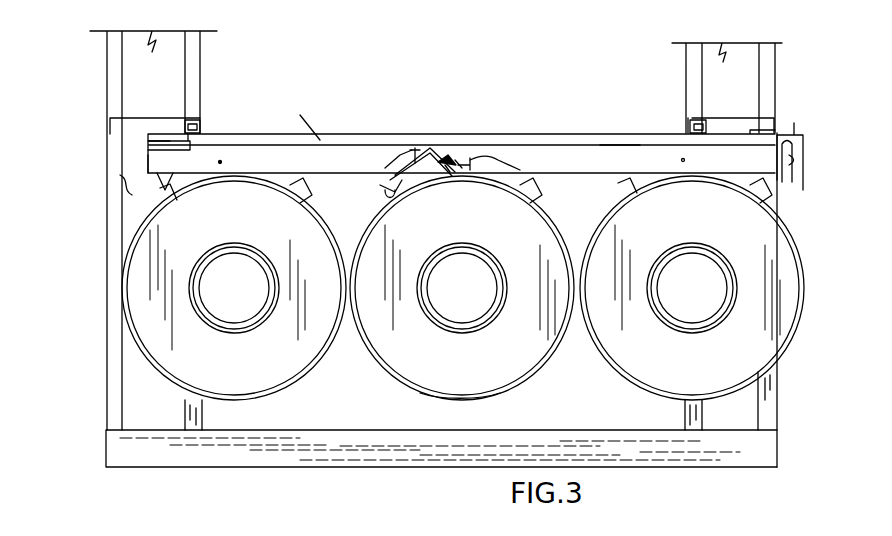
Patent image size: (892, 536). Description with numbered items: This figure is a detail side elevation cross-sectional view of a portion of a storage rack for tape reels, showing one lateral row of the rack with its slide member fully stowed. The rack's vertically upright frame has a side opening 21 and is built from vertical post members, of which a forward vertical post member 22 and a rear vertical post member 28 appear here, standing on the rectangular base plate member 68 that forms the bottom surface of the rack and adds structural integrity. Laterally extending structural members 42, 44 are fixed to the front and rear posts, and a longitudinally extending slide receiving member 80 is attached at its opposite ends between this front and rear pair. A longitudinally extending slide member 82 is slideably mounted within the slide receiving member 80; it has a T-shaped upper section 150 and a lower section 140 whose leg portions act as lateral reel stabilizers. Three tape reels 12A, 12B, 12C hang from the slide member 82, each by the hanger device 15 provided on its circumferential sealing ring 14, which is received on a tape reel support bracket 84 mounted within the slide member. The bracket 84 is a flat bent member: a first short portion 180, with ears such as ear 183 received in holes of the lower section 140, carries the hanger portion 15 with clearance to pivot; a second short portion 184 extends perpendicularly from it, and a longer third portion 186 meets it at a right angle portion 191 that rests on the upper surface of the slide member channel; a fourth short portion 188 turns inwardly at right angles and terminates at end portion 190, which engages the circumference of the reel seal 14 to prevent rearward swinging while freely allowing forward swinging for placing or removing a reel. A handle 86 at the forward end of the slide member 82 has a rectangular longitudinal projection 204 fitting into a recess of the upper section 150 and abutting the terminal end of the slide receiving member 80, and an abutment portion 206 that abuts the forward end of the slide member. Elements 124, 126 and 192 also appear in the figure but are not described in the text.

The tape reel 12A is at (665, 372).
The tape reel 12B is at (490, 375).
The tape reel 12C is at (261, 378).
The circumferential sealing ring 14 is at (425, 395).
The hanger device 15 is at (460, 170).
The side opening 21 is at (787, 362).
The vertical post member 22 is at (776, 57).
The vertical post member 28 is at (193, 65).
The laterally extending structural member 42 is at (758, 120).
The laterally extending horizontal structural member 44 is at (130, 118).
The rectangular base plate member 68 is at (414, 455).
The slide receiving member 80 is at (635, 135).
The slide member 82 is at (625, 155).
The tape reel support bracket 84 is at (140, 190).
The handle member 86 is at (802, 145).
The fastener 124 is at (697, 125).
The fastener 126 is at (193, 125).
The slide member lower section 140 is at (148, 160).
The T-shaped upper section 150 is at (147, 140).
The first relatively short length portion 180 is at (470, 180).
The outwardly extending ear 183 is at (450, 170).
The second relatively short length portion 184 is at (440, 160).
The third portion 186 is at (410, 160).
The fourth relatively short length portion 188 is at (400, 170).
The end portion 190 is at (390, 180).
The right angle portion 191 is at (430, 150).
The latch stop 192 is at (445, 165).
The rectangular longitudinal projection 204 is at (690, 120).
The abutment portion 206 is at (789, 160).